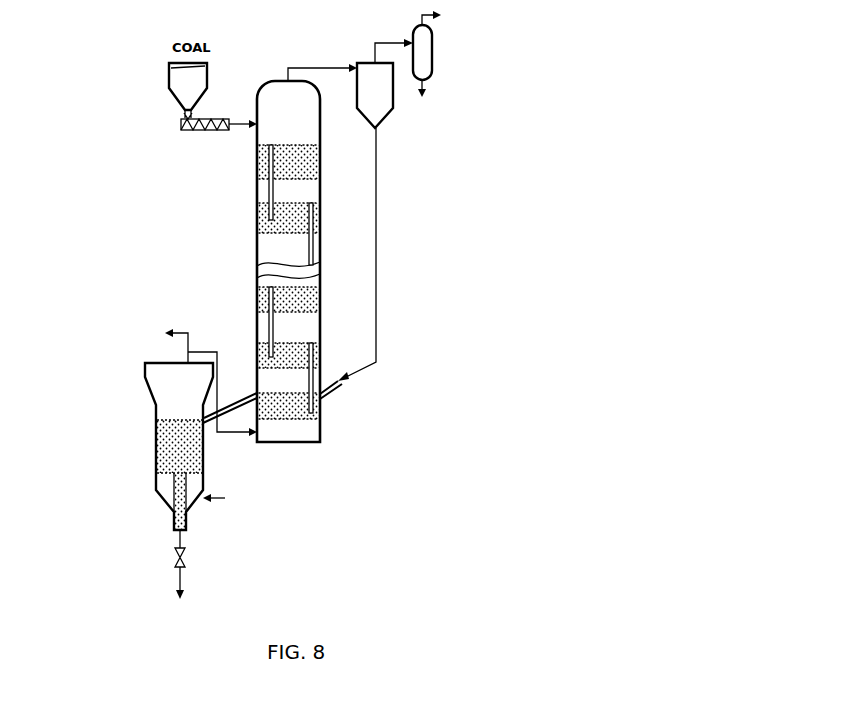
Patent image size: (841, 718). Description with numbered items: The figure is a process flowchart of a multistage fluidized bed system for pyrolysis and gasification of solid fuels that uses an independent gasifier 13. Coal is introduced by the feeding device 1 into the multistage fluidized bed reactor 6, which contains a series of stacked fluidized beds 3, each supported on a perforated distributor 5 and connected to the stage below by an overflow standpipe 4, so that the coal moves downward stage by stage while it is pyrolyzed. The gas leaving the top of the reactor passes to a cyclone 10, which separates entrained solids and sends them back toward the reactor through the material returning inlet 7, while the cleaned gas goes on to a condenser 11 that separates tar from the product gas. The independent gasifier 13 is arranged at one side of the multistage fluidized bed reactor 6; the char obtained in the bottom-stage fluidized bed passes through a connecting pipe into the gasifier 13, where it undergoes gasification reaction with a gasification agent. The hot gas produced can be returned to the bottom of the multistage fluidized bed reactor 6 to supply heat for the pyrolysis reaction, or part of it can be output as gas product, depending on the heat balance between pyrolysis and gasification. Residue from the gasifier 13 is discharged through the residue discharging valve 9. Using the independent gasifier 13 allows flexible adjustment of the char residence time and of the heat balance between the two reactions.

The feeding device 1 is at (181, 122).
The fluidized beds 3 is at (262, 107).
The overflow standpipes 4 is at (268, 150).
The perforated distributors 5 is at (319, 178).
The multistage fluidized bed reactor 6 is at (278, 80).
The material returning inlet 7 is at (343, 387).
The residue discharging valve 9 is at (176, 560).
The cyclone 10 is at (357, 62).
The condenser 11 is at (412, 35).
The gasifier 13 is at (146, 378).